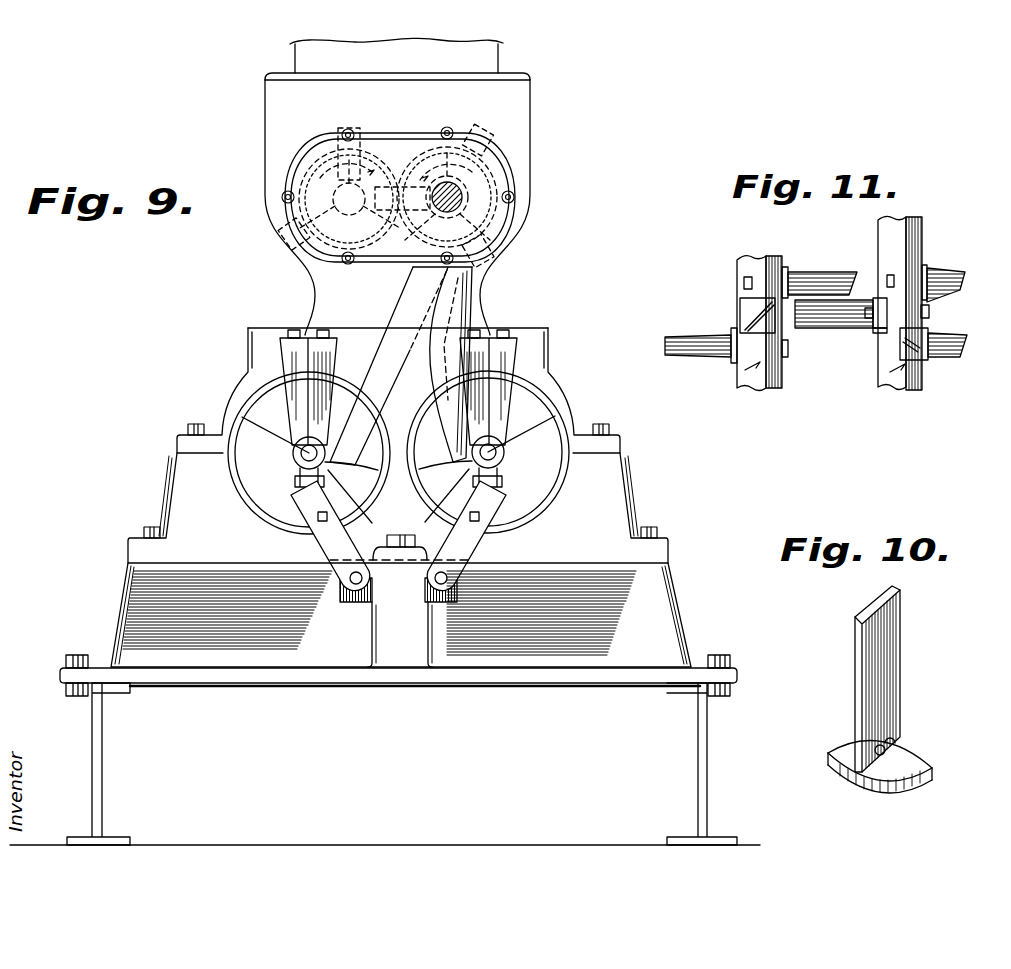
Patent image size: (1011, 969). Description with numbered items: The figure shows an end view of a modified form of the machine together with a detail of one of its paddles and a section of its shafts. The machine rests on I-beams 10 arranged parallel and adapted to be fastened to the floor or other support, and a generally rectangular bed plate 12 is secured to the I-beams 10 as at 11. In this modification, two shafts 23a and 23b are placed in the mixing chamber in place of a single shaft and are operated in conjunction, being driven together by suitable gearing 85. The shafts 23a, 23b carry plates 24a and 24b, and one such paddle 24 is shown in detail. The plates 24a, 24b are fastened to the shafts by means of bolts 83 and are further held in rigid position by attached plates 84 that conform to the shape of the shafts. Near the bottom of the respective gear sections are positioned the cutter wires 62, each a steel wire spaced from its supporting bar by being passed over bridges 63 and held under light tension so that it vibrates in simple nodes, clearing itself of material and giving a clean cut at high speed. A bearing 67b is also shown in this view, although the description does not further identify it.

In FIG. 9, the I-beams 10 is at (107, 720).
In FIG. 9, the fastening of bed plate to I-beams 11 is at (79, 661).
In FIG. 9, the bed plate 12 is at (677, 598).
In FIG. 9, the shaft 23a is at (336, 226).
In FIG. 11, the shaft 23a is at (757, 382).
In FIG. 9, the shaft 23b is at (462, 202).
In FIG. 11, the shaft 23b is at (898, 385).
In FIG. 10, the paddle 24 is at (865, 685).
In FIG. 9, the plate 24a is at (338, 158).
In FIG. 11, the plate 24a is at (697, 352).
In FIG. 9, the plate 24b is at (465, 178).
In FIG. 11, the plate 24b is at (843, 318).
In FIG. 9, the cutter wire 62 is at (428, 481).
In FIG. 9, the bridges 63 is at (417, 482).
In FIG. 9, the bearing 67b is at (504, 458).
In FIG. 11, the bolts 83 is at (929, 313).
In FIG. 11, the attached plates 84 is at (877, 296).
In FIG. 10, the attached plates 84 is at (900, 760).
In FIG. 9, the gearing 85 is at (462, 190).